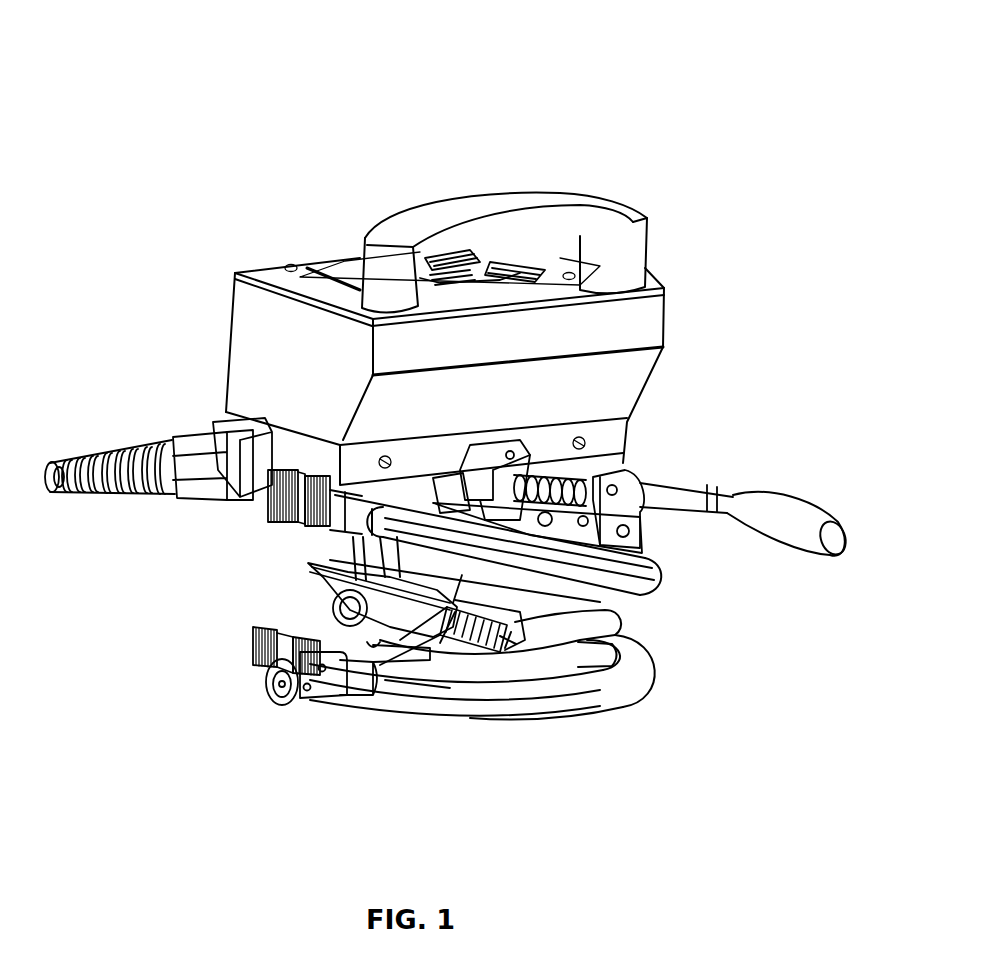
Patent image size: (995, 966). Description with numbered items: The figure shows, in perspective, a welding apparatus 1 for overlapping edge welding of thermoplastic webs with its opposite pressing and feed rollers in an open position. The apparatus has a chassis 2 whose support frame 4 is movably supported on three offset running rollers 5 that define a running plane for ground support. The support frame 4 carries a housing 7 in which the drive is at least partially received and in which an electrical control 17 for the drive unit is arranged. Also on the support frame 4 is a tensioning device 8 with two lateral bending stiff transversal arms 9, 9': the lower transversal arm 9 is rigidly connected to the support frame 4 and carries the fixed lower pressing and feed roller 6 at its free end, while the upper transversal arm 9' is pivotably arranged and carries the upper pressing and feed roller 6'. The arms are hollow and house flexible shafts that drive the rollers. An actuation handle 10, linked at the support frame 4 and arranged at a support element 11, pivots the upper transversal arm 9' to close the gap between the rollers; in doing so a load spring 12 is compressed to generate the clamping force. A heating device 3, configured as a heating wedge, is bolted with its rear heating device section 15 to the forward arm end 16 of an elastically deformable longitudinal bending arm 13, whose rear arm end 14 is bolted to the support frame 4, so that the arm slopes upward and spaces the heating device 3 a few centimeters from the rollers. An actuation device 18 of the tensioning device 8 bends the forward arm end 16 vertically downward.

The welding apparatus 1 is at (103, 132).
The chassis 2 is at (656, 621).
The heating device 3 is at (298, 565).
The support frame 4 is at (462, 575).
The running rollers 5 is at (333, 598).
The lower pressing and feed roller 6 is at (226, 666).
The upper pressing and feed roller 6' is at (256, 522).
The housing 7 is at (643, 317).
The tensioning device 8 is at (632, 474).
The lower transversal arm 9 is at (530, 695).
The upper transversal arm 9' is at (544, 548).
The actuation handle 10 is at (780, 513).
The support element 11 is at (560, 517).
The load spring 12 is at (573, 442).
The longitudinal bending arm 13 is at (455, 630).
The rear arm end 14 is at (508, 641).
The heating device section 15 is at (441, 621).
The forward arm end 16 is at (453, 625).
The electrical control 17 is at (493, 255).
The actuation device 18 is at (646, 454).